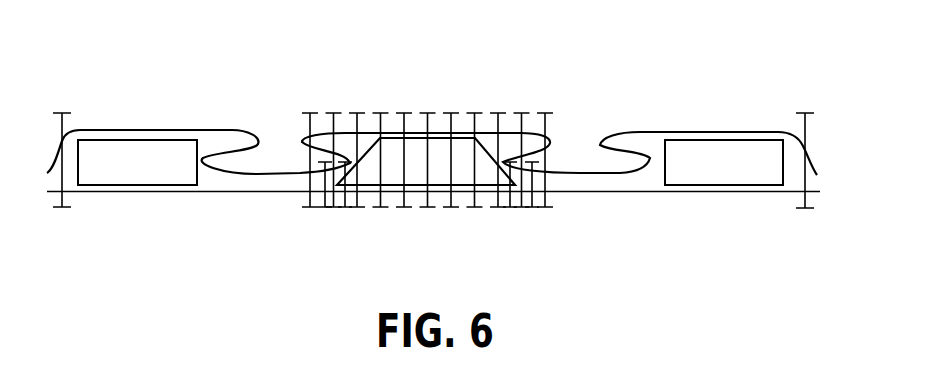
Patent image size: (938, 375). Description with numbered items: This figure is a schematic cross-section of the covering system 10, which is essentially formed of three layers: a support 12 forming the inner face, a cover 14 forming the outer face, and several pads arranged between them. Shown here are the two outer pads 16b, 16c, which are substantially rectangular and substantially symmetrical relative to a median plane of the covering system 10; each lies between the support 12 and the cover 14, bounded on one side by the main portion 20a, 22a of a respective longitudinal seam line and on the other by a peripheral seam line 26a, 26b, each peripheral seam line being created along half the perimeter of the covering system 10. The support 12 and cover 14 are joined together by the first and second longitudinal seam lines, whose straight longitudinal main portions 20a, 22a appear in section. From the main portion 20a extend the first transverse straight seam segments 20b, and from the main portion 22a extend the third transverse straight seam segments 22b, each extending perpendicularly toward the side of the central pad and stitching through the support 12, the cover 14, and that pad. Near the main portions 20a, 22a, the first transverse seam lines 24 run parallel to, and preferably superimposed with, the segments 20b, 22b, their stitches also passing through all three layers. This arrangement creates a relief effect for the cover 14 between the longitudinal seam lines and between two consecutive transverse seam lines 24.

The covering system 10 is at (826, 146).
The support 12 is at (212, 192).
The cover 14 is at (232, 130).
The pad 16b is at (130, 152).
The pad 16c is at (730, 152).
The longitudinal main portion 20a is at (324, 207).
The first transverse straight seam segment 20b is at (346, 207).
The longitudinal main portion 22a is at (530, 207).
The third transverse straight seam segment 22b is at (511, 207).
The first transverse seam line 24 is at (461, 92).
The peripheral seam line 26a is at (58, 113).
The peripheral seam line 26b is at (808, 113).